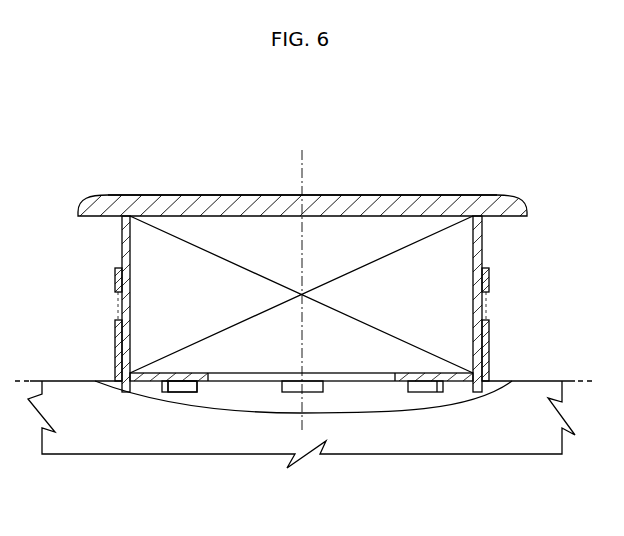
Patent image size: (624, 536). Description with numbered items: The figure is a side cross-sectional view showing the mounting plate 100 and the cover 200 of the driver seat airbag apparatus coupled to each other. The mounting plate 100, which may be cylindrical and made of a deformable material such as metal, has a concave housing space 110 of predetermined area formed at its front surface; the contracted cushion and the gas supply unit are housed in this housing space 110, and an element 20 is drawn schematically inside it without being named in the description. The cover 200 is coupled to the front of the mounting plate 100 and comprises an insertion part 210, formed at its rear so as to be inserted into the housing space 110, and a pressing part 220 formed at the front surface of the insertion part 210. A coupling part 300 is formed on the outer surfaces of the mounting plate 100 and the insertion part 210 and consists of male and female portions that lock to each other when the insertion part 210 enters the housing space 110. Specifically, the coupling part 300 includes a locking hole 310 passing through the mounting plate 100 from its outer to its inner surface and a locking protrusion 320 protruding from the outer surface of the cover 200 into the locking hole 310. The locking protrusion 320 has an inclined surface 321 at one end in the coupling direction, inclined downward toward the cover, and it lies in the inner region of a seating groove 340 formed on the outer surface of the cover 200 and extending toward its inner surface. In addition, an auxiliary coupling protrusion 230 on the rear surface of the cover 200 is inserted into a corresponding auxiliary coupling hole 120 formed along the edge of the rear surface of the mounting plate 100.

The display module 20 is at (439, 253).
The mounting plate 100 is at (487, 359).
The housing space 110 is at (130, 382).
The auxiliary coupling hole 120 is at (112, 386).
The cover 200 is at (393, 204).
The insertion part 210 is at (120, 247).
The pressing part 220 is at (350, 205).
The auxiliary coupling protrusion 230 is at (187, 383).
The coupling part 300 is at (114, 309).
The locking hole 310 is at (490, 296).
The locking protrusion 320 is at (117, 295).
The inclined surface 321 is at (118, 316).
The seating groove 340 is at (490, 318).